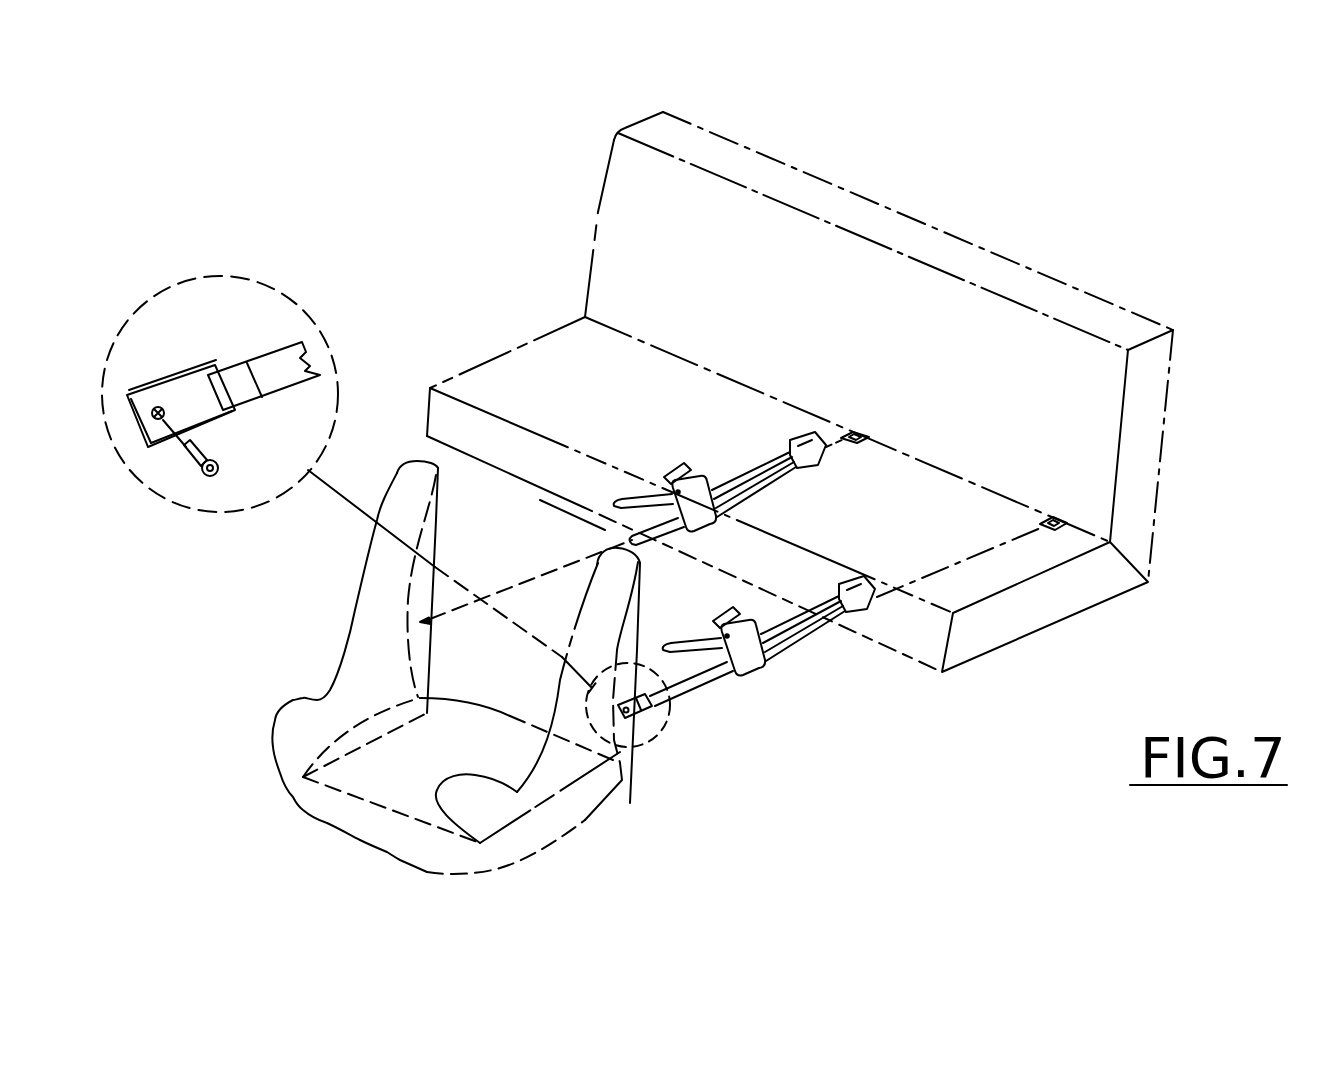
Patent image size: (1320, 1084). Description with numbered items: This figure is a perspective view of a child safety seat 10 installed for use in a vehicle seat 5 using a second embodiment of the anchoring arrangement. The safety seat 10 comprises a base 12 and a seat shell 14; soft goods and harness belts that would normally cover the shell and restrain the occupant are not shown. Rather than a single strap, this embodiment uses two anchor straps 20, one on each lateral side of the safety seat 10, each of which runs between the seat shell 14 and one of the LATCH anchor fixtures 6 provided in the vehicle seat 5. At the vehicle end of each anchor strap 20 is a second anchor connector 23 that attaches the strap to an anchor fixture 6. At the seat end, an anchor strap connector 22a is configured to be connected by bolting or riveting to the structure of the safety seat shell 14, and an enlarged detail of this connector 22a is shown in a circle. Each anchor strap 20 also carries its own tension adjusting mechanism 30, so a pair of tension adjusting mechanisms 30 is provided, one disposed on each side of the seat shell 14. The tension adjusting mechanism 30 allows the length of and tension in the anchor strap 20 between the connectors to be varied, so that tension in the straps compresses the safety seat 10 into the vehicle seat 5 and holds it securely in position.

The vehicle seat 5 is at (762, 172).
The LATCH anchor 6 is at (862, 430).
The child safety seat 10 is at (410, 621).
The base 12 is at (544, 812).
The seat shell 14 is at (393, 493).
The lower anchor strap 20 is at (660, 400).
The anchor strap connector 22a is at (192, 393).
The second anchor connector 23 is at (793, 445).
The tension adjusting mechanism 30 is at (670, 450).